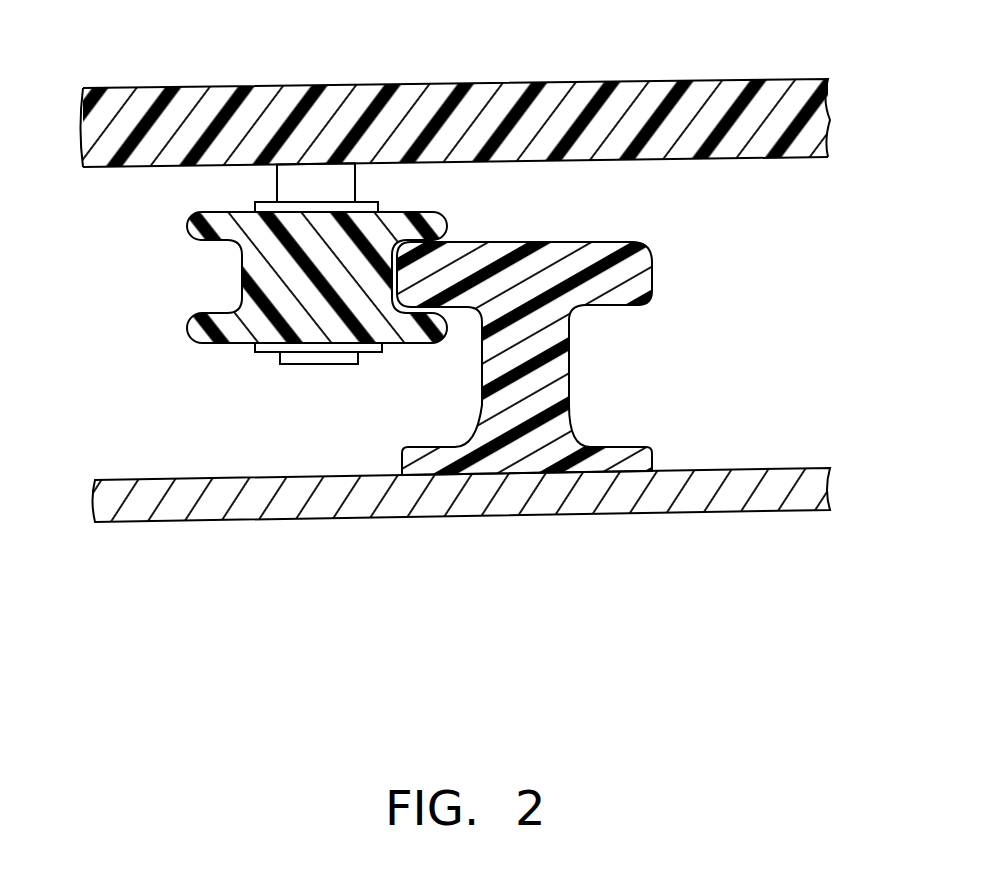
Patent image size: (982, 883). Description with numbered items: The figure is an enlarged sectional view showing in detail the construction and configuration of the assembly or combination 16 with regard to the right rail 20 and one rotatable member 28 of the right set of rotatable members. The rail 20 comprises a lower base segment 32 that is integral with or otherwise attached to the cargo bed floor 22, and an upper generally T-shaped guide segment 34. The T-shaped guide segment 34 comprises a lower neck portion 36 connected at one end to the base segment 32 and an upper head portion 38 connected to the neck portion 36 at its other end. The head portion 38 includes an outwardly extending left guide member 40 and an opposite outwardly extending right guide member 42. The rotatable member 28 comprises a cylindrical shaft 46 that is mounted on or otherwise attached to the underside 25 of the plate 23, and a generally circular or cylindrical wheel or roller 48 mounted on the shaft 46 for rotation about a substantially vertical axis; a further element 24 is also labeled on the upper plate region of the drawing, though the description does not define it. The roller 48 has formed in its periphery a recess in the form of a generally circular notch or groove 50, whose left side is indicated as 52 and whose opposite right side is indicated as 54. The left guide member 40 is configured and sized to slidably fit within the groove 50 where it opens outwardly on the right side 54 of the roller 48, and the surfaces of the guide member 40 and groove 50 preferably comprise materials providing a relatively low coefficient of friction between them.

The assembly or combination 16 is at (250, 430).
The right rail 20 is at (725, 339).
The cargo bed floor 22 is at (712, 468).
The plate 23 is at (425, 108).
The upper plate 24 is at (443, 119).
The underside of plate 25 is at (124, 167).
The rotatable member 28 is at (160, 225).
The lower base segment 32 is at (490, 467).
The T-shaped guide segment 34 is at (607, 228).
The neck portion 36 is at (528, 388).
The head portion 38 is at (517, 275).
The left guide member 40 is at (478, 322).
The right guide member 42 is at (610, 283).
The cylindrical shaft 46 is at (342, 182).
The wheel or roller 48 is at (257, 317).
The groove 50 is at (175, 289).
The left side of groove 52 is at (128, 273).
The right side of groove 54 is at (508, 232).